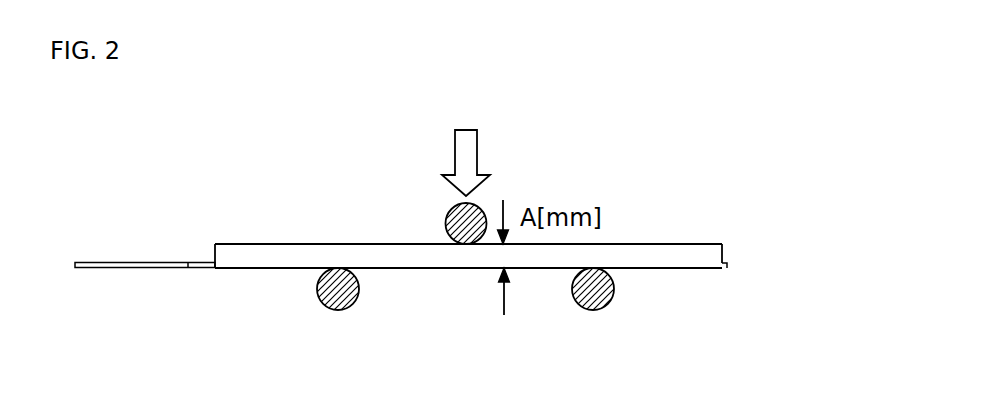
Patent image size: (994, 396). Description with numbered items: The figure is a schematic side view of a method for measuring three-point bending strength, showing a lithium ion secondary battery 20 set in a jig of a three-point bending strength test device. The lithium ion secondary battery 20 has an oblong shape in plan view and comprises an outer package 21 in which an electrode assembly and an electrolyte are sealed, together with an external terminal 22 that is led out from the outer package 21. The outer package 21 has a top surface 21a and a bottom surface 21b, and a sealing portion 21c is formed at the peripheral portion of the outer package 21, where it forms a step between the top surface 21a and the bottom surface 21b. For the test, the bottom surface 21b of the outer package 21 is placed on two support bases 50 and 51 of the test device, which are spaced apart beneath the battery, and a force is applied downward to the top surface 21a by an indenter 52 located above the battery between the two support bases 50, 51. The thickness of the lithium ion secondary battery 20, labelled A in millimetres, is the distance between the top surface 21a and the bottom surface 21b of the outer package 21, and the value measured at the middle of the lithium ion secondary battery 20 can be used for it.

The lithium ion secondary battery 20 is at (710, 175).
The outer package 21 is at (677, 243).
The top surface 21a is at (255, 244).
The bottom surface 21b is at (270, 268).
The sealing portion 21c is at (195, 268).
The external terminal 22 is at (127, 262).
The support base 50 is at (338, 297).
The support base 51 is at (594, 297).
The indenter 52 is at (472, 216).